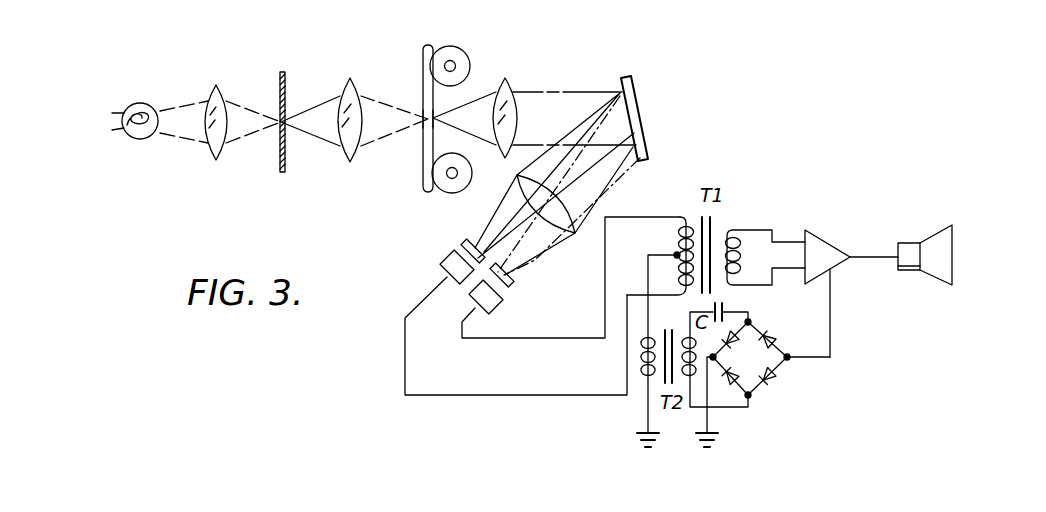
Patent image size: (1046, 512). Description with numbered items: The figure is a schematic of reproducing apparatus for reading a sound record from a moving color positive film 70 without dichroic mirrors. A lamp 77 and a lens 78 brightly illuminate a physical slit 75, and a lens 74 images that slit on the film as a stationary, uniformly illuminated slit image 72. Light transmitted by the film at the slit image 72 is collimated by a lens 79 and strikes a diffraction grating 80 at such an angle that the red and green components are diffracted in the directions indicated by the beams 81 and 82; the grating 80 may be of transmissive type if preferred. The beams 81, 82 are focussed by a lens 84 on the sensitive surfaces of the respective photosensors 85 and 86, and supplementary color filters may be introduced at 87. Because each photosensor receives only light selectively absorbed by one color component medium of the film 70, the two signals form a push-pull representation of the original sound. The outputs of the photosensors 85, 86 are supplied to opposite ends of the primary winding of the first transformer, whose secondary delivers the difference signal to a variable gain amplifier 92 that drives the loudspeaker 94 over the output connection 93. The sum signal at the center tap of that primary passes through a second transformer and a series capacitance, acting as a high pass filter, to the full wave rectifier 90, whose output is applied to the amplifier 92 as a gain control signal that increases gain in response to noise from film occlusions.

The moving color positive film 70 is at (423, 78).
The slit image 72 is at (423, 122).
The lens 74 is at (348, 87).
The physical slit 75 is at (279, 125).
The lamp 77 is at (144, 103).
The lens 78 is at (217, 90).
The lens 79 is at (512, 92).
The diffraction grating 80 is at (633, 93).
The beam 81 is at (498, 210).
The beam 82 is at (537, 253).
The lens 84 is at (563, 230).
The photosensor 85 is at (443, 262).
The photosensor 86 is at (497, 305).
The supplementary color filters 87 is at (460, 242).
The full wave rectifier 90 is at (789, 376).
The variable gain amplifier 92 is at (821, 246).
The output line 93 is at (872, 260).
The loudspeaker 94 is at (908, 246).